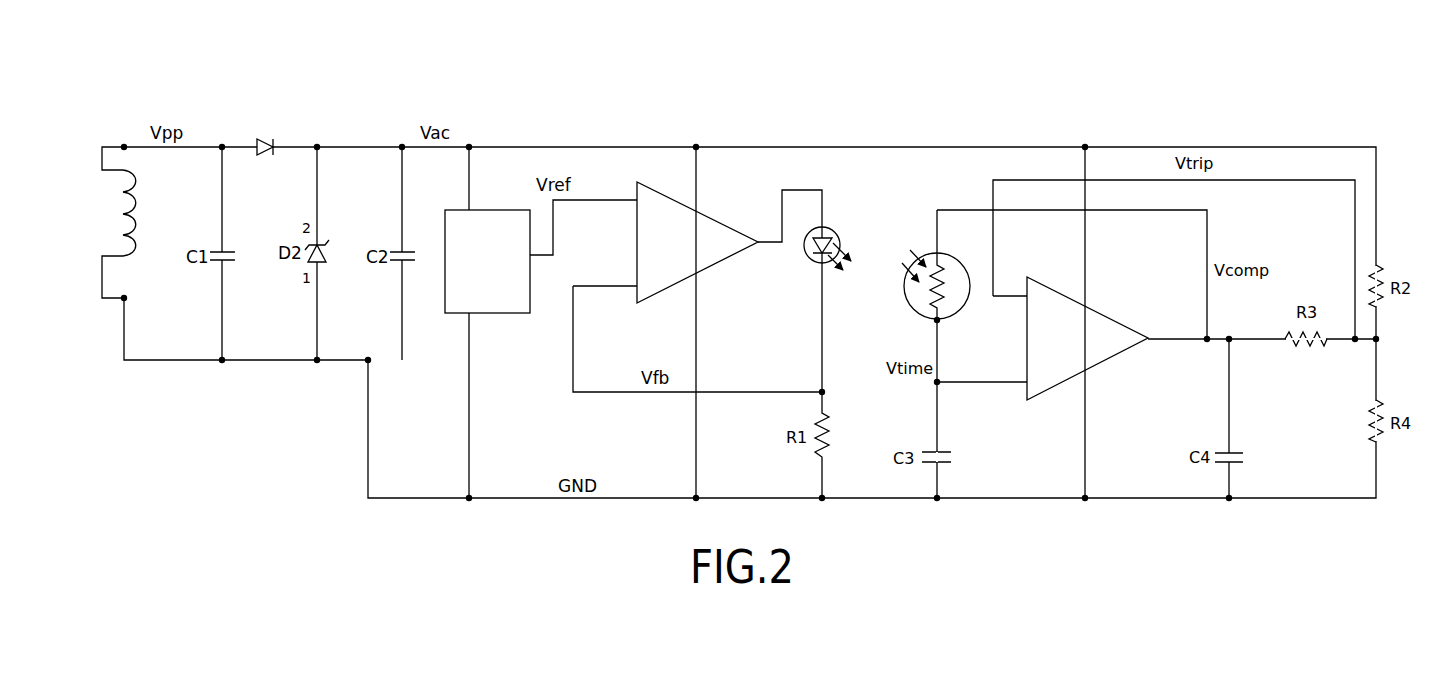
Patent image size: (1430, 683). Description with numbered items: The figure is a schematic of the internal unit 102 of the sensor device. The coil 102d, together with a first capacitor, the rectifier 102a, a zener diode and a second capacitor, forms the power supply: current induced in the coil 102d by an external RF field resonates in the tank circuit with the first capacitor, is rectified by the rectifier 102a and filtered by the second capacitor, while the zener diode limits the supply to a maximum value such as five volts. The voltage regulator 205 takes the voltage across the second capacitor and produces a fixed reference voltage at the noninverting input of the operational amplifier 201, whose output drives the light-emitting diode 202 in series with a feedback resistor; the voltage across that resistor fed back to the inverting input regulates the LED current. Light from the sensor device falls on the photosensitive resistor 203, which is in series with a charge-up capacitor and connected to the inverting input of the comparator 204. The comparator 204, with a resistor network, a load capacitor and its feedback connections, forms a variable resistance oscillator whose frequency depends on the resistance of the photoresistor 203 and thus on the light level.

The internal unit 102 is at (678, 98).
The rectifier 102a is at (263, 157).
The coil 102d is at (112, 188).
The operational amplifier 201 is at (720, 220).
The light-emitting diode 202 is at (842, 233).
The photosensitive resistor 203 is at (962, 262).
The comparator 204 is at (1045, 392).
The voltage regulator 205 is at (502, 314).